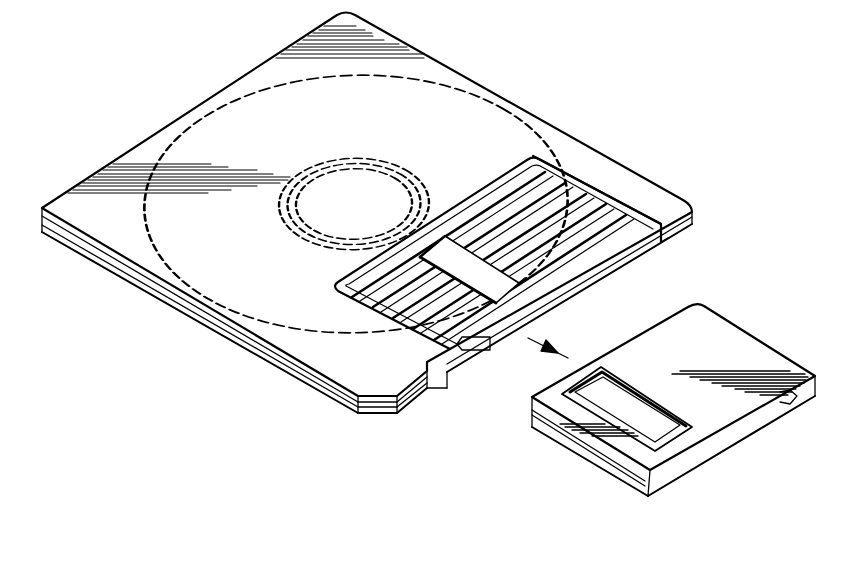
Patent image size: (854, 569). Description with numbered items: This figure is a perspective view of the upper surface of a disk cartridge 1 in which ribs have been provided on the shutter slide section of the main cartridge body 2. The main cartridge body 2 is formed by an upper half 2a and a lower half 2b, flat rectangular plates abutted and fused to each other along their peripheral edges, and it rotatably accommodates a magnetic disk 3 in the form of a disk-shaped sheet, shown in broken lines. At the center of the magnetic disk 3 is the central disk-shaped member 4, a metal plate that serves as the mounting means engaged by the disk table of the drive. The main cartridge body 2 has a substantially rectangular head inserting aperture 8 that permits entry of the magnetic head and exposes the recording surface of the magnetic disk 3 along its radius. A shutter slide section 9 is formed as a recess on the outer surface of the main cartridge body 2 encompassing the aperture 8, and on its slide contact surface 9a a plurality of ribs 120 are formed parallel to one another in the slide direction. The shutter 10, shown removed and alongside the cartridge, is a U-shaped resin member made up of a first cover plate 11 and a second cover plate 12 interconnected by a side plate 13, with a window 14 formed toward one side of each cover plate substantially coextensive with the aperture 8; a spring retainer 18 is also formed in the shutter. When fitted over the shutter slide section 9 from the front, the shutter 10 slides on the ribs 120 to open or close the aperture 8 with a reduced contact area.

The disk cartridge 1 is at (145, 122).
The main cartridge body 2 is at (40, 163).
The upper half 2a is at (82, 200).
The lower half 2b is at (50, 240).
The magnetic disk 3 is at (449, 107).
The central disk-shaped member 4 is at (311, 172).
The head inserting aperture 8 is at (545, 300).
The shutter slide section 9 is at (609, 199).
The slide contact surface 9a is at (447, 322).
The shutter 10 is at (804, 322).
The first cover plate 11 is at (720, 322).
The second cover plate 12 is at (583, 457).
The side plate 13 is at (727, 436).
The window 14 is at (643, 393).
The spring retainer 18 is at (783, 398).
The rib 120 is at (558, 170).